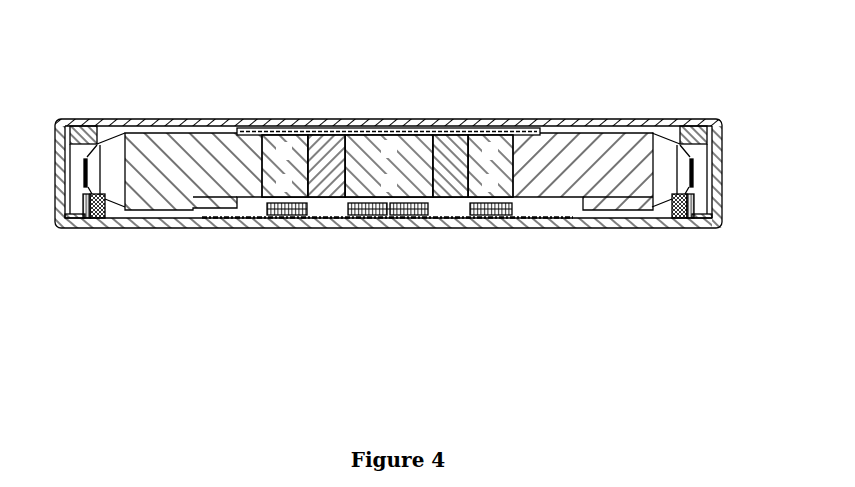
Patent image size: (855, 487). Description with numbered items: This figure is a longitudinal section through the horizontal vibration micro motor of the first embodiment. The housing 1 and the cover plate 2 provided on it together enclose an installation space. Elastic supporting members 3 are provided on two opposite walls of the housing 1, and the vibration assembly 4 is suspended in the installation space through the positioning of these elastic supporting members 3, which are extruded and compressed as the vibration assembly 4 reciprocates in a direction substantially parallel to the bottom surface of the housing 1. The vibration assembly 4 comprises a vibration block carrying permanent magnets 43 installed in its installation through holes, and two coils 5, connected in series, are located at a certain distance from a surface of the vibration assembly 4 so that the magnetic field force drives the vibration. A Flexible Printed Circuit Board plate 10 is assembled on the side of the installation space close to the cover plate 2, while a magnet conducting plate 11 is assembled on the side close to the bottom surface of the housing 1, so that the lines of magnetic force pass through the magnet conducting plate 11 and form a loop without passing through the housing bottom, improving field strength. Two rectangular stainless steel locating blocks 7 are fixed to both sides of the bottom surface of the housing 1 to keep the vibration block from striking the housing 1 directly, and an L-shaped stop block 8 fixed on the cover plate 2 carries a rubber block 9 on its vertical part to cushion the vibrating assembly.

The housing 1 is at (673, 128).
The cover plate 2 is at (635, 227).
The elastic supporting member 3 is at (118, 125).
The vibration assembly 4 is at (540, 160).
The permanent magnet 43 is at (485, 150).
The coil 5 is at (421, 210).
The locating block 7 is at (85, 127).
The L-shaped stop block 8 is at (85, 220).
The rubber block 9 is at (108, 225).
The FPCB plate 10 is at (563, 220).
The magnet conducting plate 11 is at (266, 130).